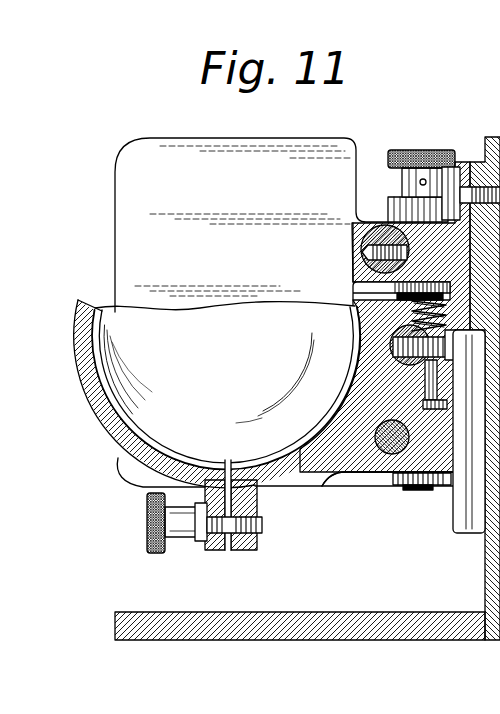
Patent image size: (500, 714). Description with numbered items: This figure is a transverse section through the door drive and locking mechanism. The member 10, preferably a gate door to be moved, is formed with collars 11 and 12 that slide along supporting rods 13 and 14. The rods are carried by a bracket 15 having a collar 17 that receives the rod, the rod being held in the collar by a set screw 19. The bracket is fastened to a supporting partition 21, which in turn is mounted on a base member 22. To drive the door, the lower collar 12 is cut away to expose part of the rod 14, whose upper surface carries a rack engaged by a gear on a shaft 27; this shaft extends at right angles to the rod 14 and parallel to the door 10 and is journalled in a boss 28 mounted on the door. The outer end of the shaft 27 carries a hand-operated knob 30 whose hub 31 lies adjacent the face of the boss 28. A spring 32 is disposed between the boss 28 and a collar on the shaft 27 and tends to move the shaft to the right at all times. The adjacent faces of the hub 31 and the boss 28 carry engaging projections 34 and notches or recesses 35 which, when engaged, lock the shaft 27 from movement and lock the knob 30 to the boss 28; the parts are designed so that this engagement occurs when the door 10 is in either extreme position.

The member 10 is at (253, 225).
The collar 11 is at (352, 306).
The collar 12 is at (446, 487).
The rod 13 is at (372, 283).
The rod 14 is at (381, 474).
The bracket 15 is at (358, 285).
The collar 17 is at (362, 231).
The set screw 19 is at (361, 254).
The supporting partition 21 is at (496, 553).
The base member 22 is at (378, 590).
The shaft 27 is at (421, 389).
The boss 28 is at (452, 147).
The knob 30 is at (421, 150).
The hub 31 is at (412, 203).
The spring 32 is at (410, 330).
The projection 34 is at (396, 150).
The notch 35 is at (392, 221).